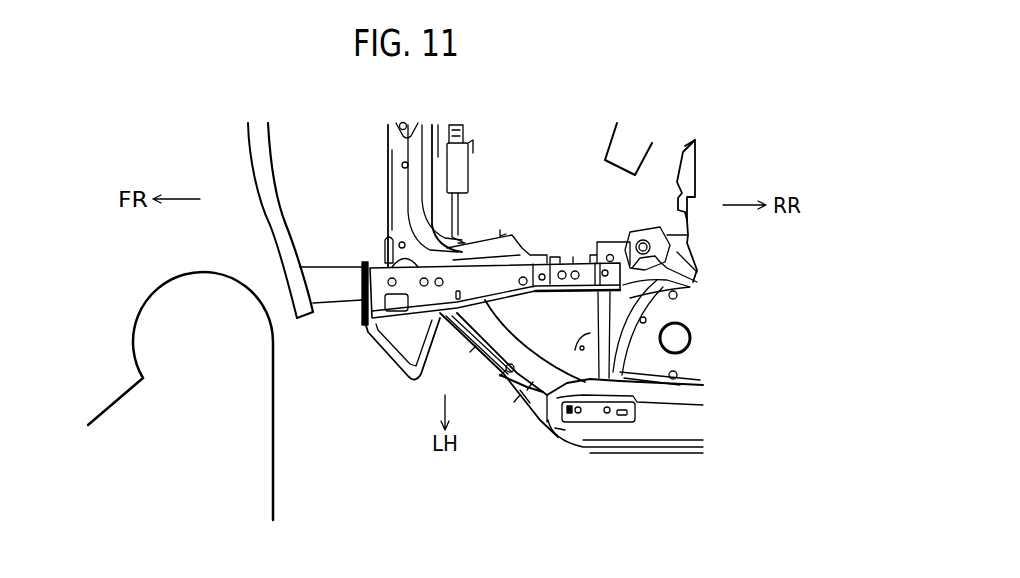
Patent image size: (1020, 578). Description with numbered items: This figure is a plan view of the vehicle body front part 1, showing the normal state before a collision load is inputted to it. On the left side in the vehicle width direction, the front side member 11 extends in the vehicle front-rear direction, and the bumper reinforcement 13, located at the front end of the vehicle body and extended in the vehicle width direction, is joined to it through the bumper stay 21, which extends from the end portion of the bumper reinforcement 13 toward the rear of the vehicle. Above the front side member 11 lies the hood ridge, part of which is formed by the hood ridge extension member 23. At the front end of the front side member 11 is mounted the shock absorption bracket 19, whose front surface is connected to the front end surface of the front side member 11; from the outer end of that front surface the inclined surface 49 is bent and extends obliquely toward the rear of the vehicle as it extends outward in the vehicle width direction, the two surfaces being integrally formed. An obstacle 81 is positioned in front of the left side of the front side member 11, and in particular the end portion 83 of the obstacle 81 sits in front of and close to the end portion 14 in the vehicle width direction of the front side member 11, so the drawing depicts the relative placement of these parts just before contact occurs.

The vehicle body front part 1 is at (707, 159).
The front side member 11 is at (462, 285).
The bumper reinforcement 13 is at (250, 146).
The end portion 14 is at (293, 297).
The shock absorption bracket 19 is at (436, 365).
The bumper stay 21 is at (338, 298).
The hood ridge extension member 23 is at (553, 372).
The inclined surface 49 is at (395, 353).
The obstacle 81 is at (108, 394).
The end portion 83 is at (247, 288).